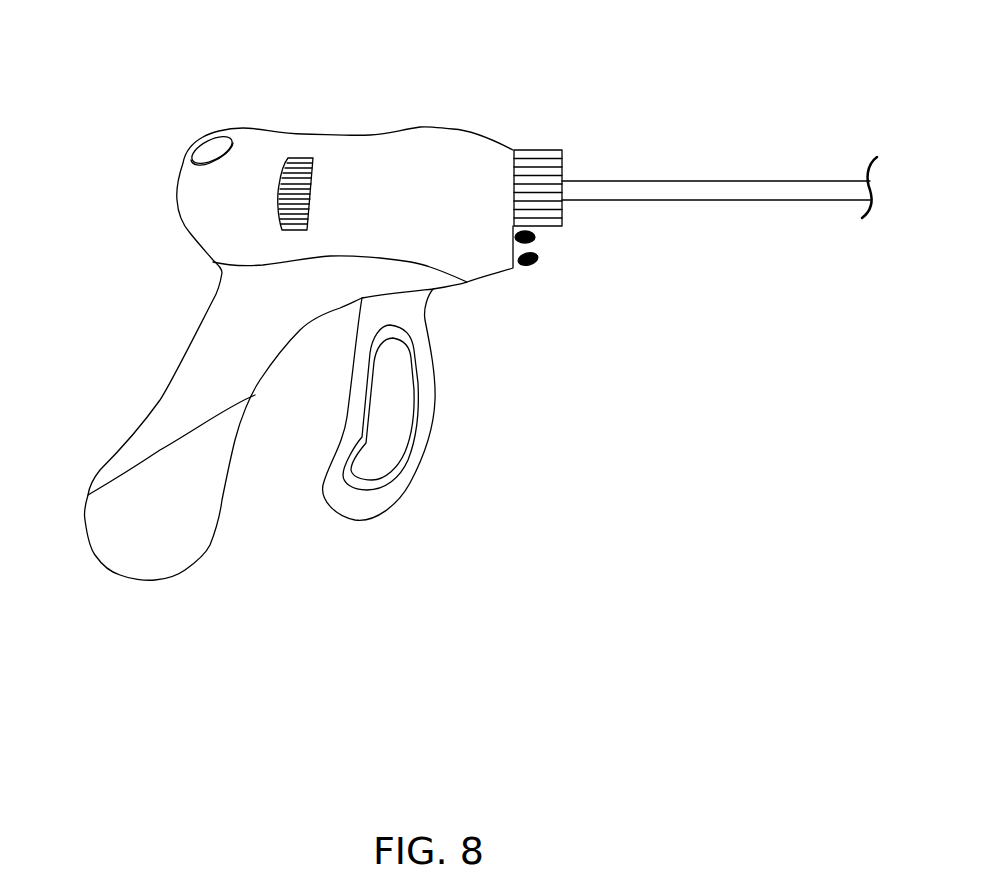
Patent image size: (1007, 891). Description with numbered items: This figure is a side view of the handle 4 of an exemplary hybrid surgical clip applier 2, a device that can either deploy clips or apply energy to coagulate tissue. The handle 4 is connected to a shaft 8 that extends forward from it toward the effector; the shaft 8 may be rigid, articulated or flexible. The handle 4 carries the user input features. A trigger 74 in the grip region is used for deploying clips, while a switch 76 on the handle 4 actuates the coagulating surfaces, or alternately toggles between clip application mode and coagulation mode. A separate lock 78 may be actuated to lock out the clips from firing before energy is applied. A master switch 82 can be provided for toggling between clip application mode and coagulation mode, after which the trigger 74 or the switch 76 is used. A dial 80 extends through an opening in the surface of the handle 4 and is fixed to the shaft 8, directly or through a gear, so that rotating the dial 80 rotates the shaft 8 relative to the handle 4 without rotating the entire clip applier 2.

The surgical clip applier 2 is at (72, 315).
The handle 4 is at (539, 150).
The shaft 8 is at (692, 180).
The trigger 74 is at (437, 412).
The switch 76 is at (537, 240).
The lock 78 is at (534, 265).
The dial 80 is at (286, 172).
The master switch 82 is at (200, 168).